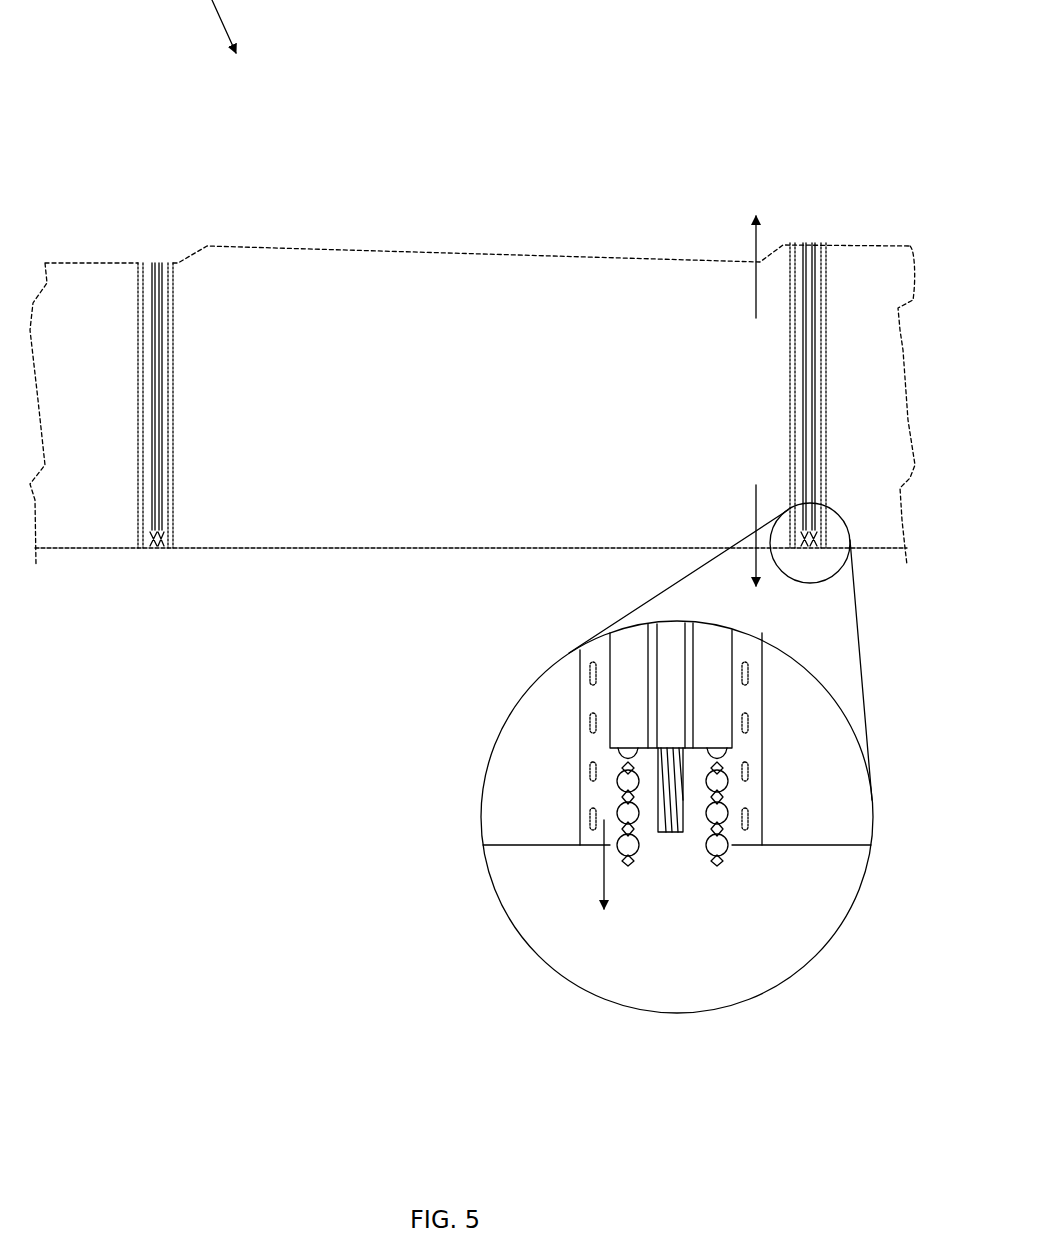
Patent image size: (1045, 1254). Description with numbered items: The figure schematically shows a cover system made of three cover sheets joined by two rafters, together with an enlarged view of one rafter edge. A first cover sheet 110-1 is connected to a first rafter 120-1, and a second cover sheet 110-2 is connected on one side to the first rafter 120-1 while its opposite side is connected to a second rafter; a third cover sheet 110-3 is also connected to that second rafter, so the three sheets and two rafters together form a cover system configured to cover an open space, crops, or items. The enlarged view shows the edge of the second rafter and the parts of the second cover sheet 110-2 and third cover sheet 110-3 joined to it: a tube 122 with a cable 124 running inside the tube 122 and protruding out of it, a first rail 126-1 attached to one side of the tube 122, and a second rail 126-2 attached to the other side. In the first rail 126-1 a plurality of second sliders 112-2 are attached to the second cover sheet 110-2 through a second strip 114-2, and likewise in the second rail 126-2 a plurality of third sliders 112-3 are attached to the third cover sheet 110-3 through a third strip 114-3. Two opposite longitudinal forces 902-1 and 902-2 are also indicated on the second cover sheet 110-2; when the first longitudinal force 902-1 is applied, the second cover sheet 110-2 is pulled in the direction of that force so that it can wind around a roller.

The first cover sheet 110-1 is at (75, 293).
The second cover sheet 110-2 is at (470, 300).
The third cover sheet 110-3 is at (866, 300).
The first rafter 120-1 is at (160, 262).
The first longitudinal force 902-1 is at (748, 495).
The second longitudinal force 902-2 is at (748, 240).
The tube 122 is at (662, 660).
The first rail 126-1 is at (625, 700).
The second rail 126-2 is at (707, 633).
The second strip 114-2 is at (597, 787).
The third strip 114-3 is at (748, 818).
The second sliders 112-2 is at (630, 857).
The third sliders 112-3 is at (717, 857).
The cable 124 is at (668, 835).